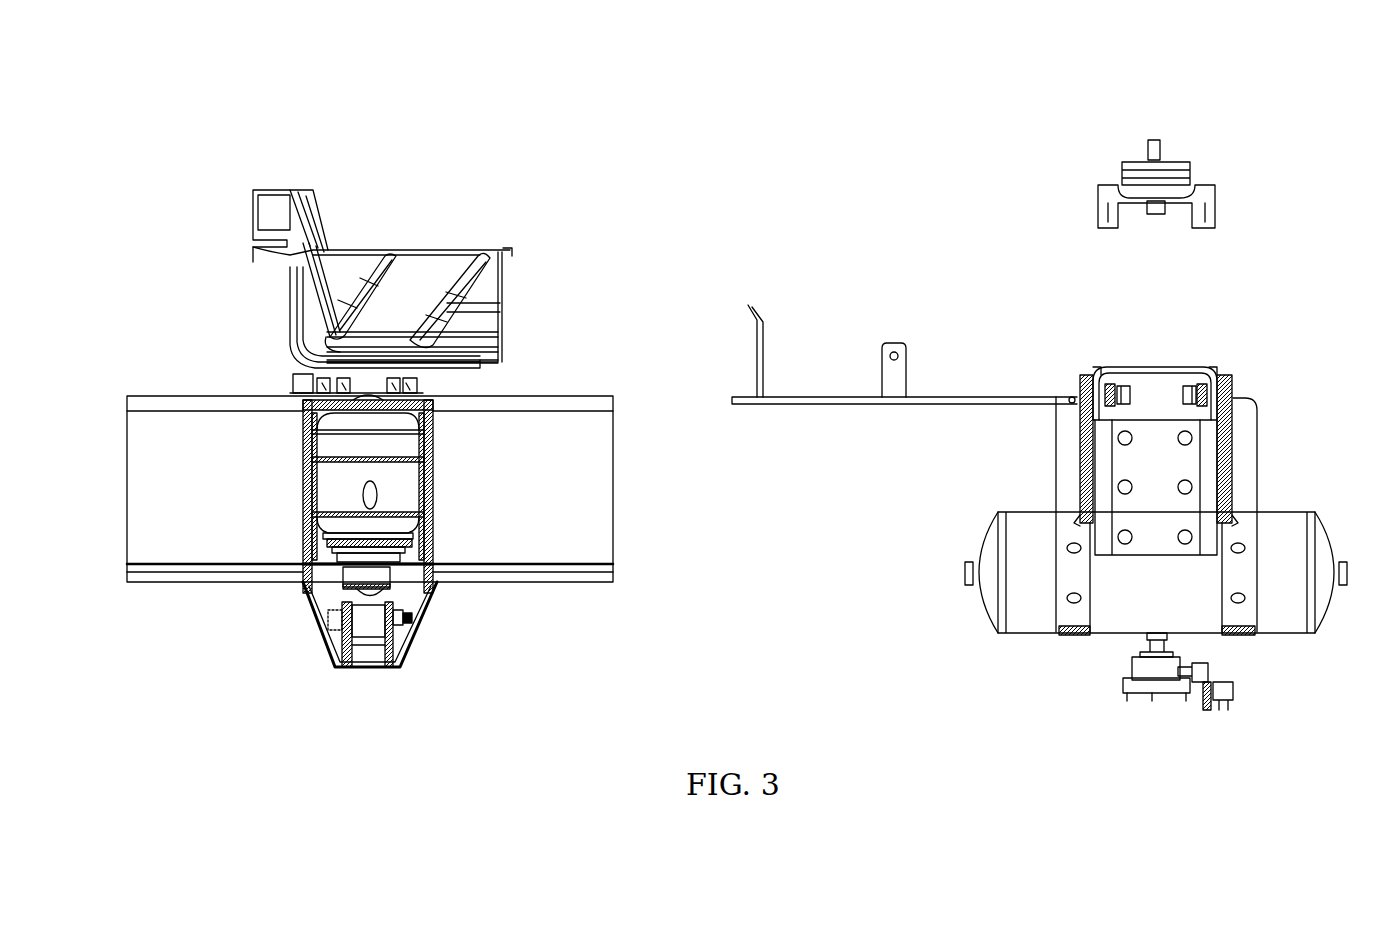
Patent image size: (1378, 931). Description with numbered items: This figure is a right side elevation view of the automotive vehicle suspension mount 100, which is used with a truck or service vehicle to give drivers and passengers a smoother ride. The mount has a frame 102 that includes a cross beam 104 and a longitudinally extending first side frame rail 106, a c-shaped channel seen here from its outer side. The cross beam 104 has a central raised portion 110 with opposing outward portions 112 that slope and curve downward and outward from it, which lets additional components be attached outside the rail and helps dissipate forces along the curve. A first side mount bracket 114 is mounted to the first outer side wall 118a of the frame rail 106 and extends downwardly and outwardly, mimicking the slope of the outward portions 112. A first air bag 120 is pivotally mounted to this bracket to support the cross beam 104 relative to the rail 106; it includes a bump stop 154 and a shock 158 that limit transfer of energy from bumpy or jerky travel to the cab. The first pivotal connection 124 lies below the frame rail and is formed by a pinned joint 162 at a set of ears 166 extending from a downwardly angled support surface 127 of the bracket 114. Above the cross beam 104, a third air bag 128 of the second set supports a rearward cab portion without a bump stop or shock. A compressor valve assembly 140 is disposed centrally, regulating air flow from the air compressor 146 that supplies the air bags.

The automotive vehicle suspension mount 100 is at (1039, 391).
The frame 102 is at (361, 533).
The cross beam 104 is at (486, 330).
The first side frame rail 106 is at (577, 585).
The central raised portion 110 is at (449, 254).
The opposing outward portions 112 is at (398, 300).
The first side mount bracket 114 is at (456, 462).
The first outer side wall 118a is at (172, 458).
The first air bag 120 is at (433, 530).
The first pivotal connection 124 is at (430, 630).
The downwardly angled support surface 127 is at (318, 610).
The third air bag 128 is at (1140, 170).
The compressor valve assembly 140 is at (275, 380).
The air compressor 146 is at (1060, 670).
The bump stop 154 is at (380, 494).
The shock 158 is at (303, 565).
The pinned joint 162 is at (381, 645).
The set of ears 166 is at (395, 650).